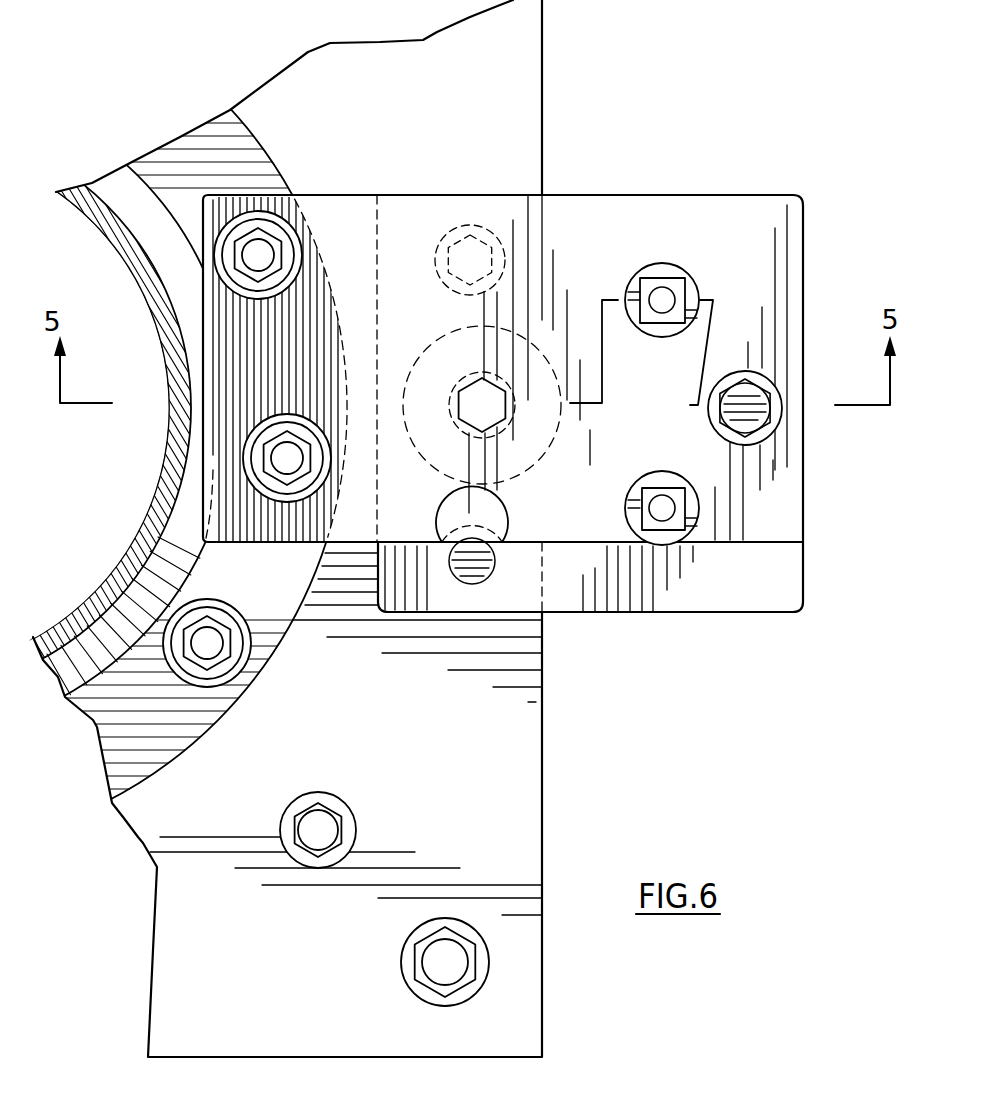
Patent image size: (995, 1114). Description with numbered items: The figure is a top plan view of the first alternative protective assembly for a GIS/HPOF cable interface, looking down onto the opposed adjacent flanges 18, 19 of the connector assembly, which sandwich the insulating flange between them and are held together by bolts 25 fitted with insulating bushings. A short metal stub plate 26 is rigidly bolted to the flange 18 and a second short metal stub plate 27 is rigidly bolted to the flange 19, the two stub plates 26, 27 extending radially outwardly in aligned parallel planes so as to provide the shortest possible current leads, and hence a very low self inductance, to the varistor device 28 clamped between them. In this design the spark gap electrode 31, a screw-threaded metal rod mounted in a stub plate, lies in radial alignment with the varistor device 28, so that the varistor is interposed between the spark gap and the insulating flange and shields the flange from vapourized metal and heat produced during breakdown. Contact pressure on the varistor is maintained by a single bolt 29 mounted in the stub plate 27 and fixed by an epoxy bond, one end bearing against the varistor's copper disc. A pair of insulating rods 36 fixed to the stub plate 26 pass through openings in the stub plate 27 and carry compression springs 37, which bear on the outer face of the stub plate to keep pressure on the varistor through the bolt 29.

The flange 18 is at (542, 745).
The flange 19 is at (172, 152).
The bolts 25 is at (277, 253).
The stub plate 26 is at (703, 612).
The stub plate 27 is at (425, 205).
The varistor device 28 is at (414, 452).
The adjustable bolts 29 is at (478, 390).
The spark gap electrode 31 is at (710, 418).
The insulating rods 36 is at (662, 300).
The compression springs 37 is at (640, 275).